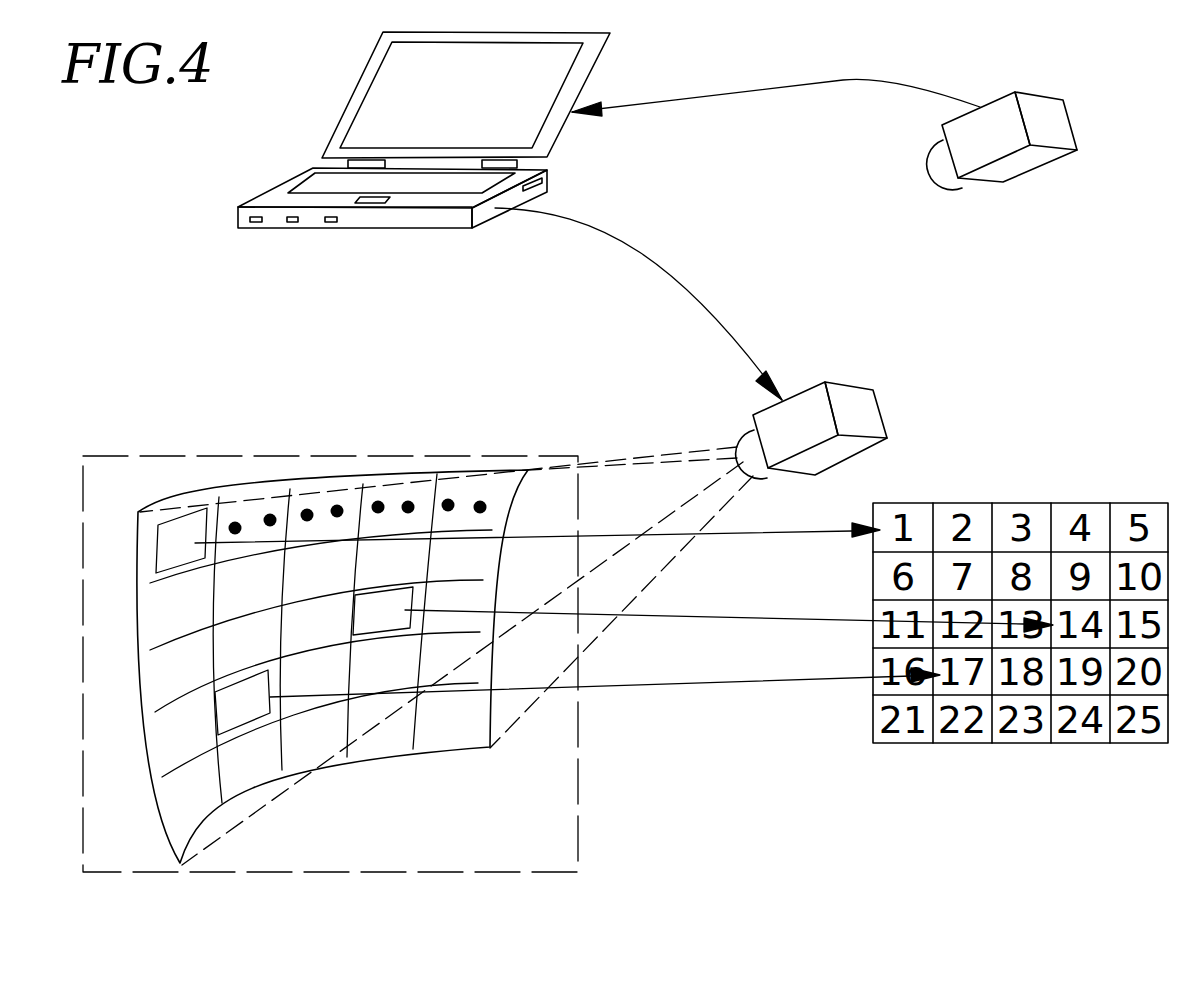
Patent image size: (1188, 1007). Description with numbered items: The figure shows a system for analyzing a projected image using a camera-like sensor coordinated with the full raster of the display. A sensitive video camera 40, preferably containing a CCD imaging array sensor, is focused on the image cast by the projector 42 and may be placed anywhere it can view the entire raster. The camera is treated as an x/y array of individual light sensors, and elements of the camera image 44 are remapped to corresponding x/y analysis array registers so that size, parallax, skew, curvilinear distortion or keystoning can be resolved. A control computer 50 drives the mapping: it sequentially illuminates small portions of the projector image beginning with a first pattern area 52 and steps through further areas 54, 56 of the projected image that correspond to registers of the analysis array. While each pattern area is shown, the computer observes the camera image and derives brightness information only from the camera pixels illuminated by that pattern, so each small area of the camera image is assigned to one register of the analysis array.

The video camera 40 is at (997, 173).
The projector 42 is at (843, 382).
The camera image 44 is at (272, 478).
The control computer 50 is at (560, 137).
The first pattern area 52 is at (193, 518).
The pattern area 54 is at (412, 595).
The pattern area 56 is at (265, 708).